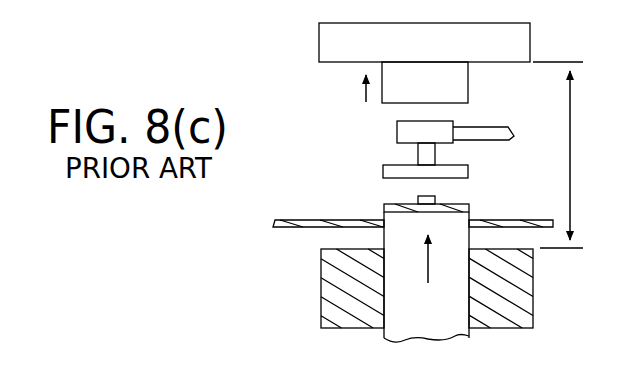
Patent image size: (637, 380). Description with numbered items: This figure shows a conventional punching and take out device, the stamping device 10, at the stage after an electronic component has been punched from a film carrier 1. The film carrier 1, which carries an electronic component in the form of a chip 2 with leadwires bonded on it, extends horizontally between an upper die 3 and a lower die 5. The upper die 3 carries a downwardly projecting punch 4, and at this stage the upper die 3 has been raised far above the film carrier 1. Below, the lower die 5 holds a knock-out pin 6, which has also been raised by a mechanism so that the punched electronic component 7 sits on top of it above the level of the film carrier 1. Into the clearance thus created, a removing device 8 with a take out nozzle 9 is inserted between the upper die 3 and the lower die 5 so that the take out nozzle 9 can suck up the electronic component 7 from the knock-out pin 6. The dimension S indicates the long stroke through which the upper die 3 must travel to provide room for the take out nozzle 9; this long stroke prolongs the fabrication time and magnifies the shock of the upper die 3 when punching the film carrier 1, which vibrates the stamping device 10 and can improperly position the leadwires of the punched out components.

The film carrier 1 is at (308, 219).
The chip 2 is at (437, 197).
The upper die 3 is at (525, 38).
The punch 4 is at (460, 88).
The lower die 5 is at (337, 273).
The knock-out pin 6 is at (460, 328).
The punched electronic component 7 is at (396, 194).
The removing device 8 is at (405, 132).
The take out nozzle 9 is at (384, 171).
The stamping device 10 is at (318, 130).
The stroke S is at (562, 155).